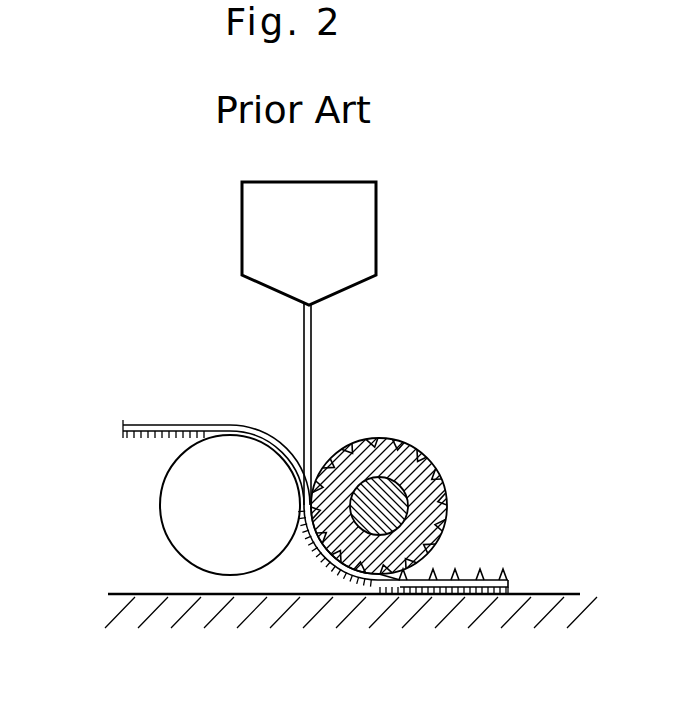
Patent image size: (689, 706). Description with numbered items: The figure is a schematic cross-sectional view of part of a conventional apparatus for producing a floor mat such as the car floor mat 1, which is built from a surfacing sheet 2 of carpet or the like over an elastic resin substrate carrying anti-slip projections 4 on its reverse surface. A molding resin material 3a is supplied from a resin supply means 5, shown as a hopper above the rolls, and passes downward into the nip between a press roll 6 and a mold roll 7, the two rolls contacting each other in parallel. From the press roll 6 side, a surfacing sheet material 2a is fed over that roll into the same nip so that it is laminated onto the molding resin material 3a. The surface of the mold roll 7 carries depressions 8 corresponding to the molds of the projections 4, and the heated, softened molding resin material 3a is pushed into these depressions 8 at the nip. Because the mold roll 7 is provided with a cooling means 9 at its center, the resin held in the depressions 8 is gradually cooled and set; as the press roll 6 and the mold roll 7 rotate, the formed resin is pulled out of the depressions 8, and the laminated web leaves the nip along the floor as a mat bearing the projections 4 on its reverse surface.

The car floor mat 1 is at (447, 577).
The surfacing sheet 2 is at (445, 594).
The surfacing sheet material 2a is at (160, 425).
The molding resin material 3a is at (305, 360).
The projections 4 is at (484, 565).
The resin supply means 5 is at (367, 244).
The press roll 6 is at (178, 513).
The mold roll 7 is at (420, 462).
The depressions 8 is at (355, 442).
The cooling means 9 is at (372, 540).